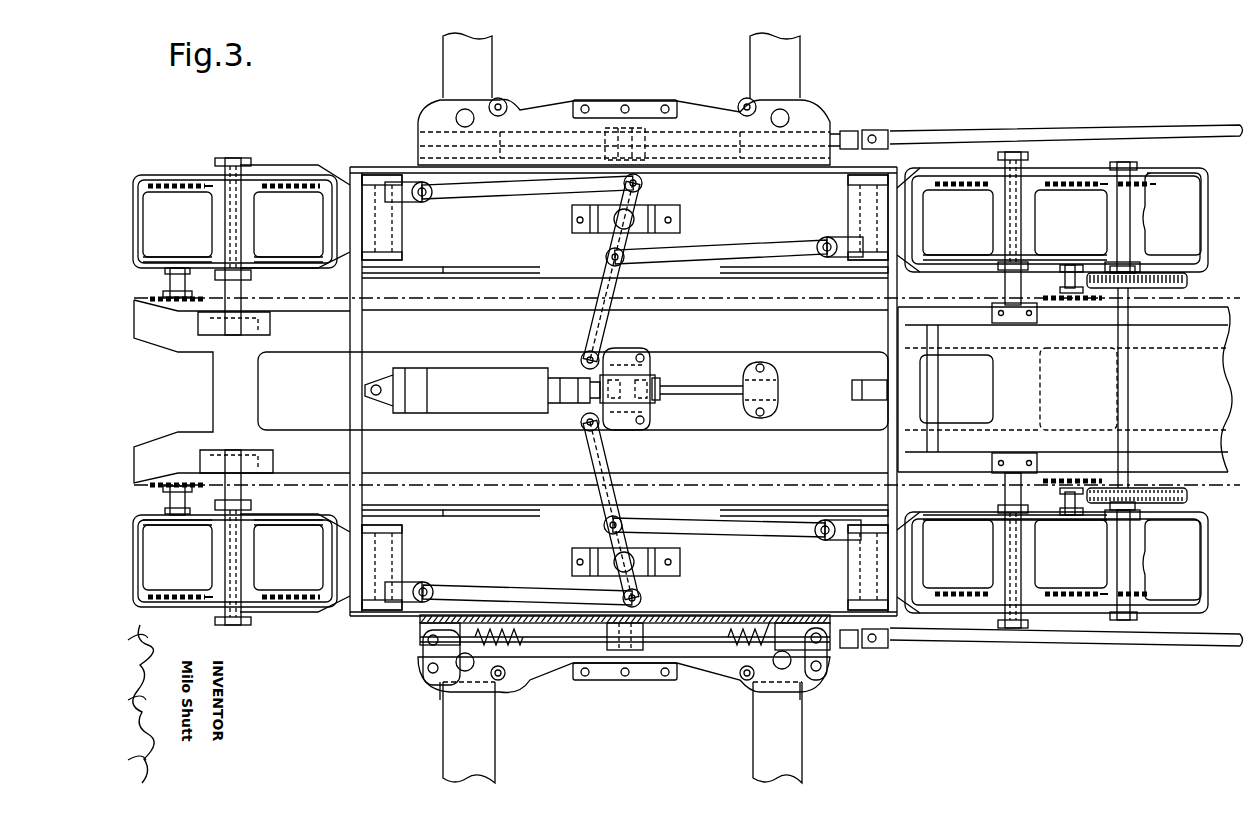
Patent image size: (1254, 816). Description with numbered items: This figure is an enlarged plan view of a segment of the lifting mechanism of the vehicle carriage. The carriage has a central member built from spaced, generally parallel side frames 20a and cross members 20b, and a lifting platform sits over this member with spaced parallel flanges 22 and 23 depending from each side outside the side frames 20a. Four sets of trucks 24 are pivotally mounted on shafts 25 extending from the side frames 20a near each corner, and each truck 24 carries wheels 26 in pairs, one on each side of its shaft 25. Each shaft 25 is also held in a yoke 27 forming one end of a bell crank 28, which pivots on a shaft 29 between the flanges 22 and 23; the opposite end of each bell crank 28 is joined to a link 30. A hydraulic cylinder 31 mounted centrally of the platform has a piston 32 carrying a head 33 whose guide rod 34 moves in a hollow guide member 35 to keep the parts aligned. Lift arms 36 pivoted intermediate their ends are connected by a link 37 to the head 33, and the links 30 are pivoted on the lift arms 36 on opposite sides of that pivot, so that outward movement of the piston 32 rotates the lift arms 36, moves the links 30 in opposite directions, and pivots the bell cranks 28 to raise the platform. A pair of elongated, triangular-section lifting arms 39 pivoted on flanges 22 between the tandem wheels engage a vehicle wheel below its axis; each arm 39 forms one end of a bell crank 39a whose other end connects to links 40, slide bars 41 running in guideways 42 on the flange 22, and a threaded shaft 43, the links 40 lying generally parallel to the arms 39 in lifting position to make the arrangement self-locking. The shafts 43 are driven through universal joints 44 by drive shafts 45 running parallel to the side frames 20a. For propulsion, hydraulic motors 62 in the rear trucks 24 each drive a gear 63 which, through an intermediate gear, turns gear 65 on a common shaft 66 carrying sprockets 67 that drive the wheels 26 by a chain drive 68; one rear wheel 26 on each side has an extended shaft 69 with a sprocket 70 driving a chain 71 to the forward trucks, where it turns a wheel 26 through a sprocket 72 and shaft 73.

The side frames 20a is at (826, 336).
The cross members 20b is at (227, 389).
The flange 22 is at (774, 616).
The flange 23 is at (475, 516).
The trucks 24 is at (1204, 628).
The shaft 25 is at (980, 488).
The wheels 26 is at (190, 233).
The yoke 27 is at (930, 660).
The bell cranks 28 is at (834, 548).
The shaft 29 is at (415, 537).
The link 30 is at (495, 576).
The hydraulic cylinder 31 is at (464, 393).
The piston 32 is at (570, 391).
The head 33 is at (642, 400).
The guide rod 34 is at (714, 392).
The hollow guide member 35 is at (780, 390).
The lift arms 36 is at (581, 455).
The link 37 is at (626, 446).
The lifting arms 39 is at (736, 746).
The bell cranks 39a is at (812, 686).
The links 40 is at (845, 668).
The slide bars 41 is at (792, 622).
The guideways 42 is at (528, 694).
The shaft 43 is at (550, 145).
The universal joints 44 is at (878, 660).
The drive shafts 45 is at (996, 641).
The hydraulic motors 62 is at (1182, 221).
The gear 63 is at (1192, 482).
The gear 65 is at (1139, 476).
The shaft 66 is at (1130, 390).
The sprockets 67 is at (1136, 620).
The chain drive 68 is at (1055, 616).
The extended shaft 69 is at (1065, 493).
The sprocket 70 is at (1069, 478).
The chain 71 is at (734, 462).
The sprocket 72 is at (176, 478).
The shaft 73 is at (170, 499).